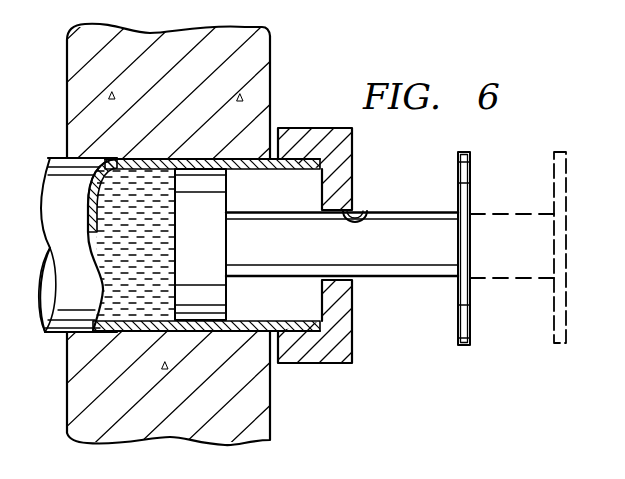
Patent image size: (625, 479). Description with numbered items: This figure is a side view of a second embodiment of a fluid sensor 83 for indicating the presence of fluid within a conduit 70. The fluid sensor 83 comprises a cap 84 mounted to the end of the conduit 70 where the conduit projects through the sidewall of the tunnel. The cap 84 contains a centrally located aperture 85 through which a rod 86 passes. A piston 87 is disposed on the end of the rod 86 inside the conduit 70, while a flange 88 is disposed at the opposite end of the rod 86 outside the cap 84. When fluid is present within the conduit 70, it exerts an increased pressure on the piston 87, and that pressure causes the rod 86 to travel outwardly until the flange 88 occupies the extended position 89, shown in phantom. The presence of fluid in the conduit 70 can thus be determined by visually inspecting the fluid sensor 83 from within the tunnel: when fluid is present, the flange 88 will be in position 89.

The conduit 70 is at (60, 157).
The fluid sensor 83 is at (278, 116).
The cap 84 is at (323, 364).
The aperture 85 is at (366, 216).
The rod 86 is at (395, 279).
The piston 87 is at (172, 219).
The flange 88 is at (471, 328).
The position 89 is at (568, 192).